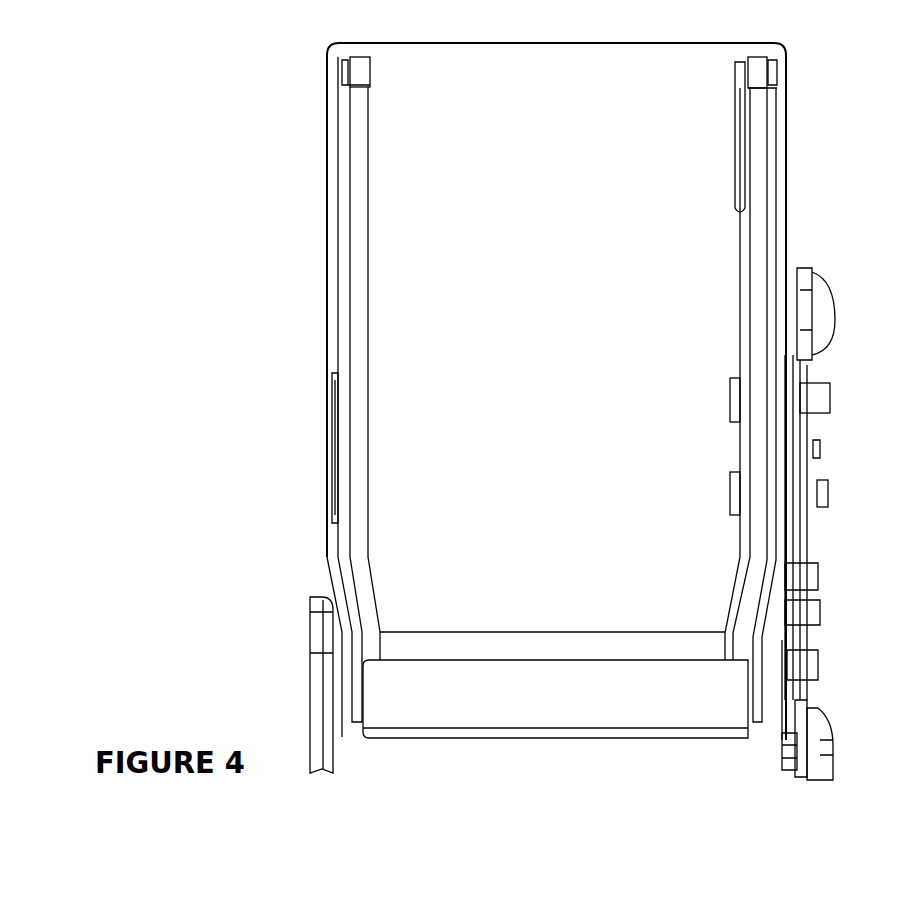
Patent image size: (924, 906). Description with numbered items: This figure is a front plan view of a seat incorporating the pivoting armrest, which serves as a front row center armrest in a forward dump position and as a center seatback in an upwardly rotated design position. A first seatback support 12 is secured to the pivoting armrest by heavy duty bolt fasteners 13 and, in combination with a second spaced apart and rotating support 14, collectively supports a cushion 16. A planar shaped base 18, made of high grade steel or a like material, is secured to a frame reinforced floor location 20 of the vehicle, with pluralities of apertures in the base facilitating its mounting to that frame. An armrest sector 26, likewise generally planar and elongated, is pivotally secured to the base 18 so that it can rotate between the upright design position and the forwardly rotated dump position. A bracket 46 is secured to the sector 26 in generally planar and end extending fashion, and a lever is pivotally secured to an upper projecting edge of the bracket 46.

The first seatback support 12 is at (777, 226).
The heavy duty bolt fasteners 13 is at (731, 490).
The second spaced apart and rotating support 14 is at (343, 244).
The cushion 16 is at (328, 126).
The planar shaped base 18 is at (793, 714).
The frame reinforced floor location 20 is at (827, 731).
The armrest sector 26 is at (798, 546).
The bracket 46 is at (808, 371).